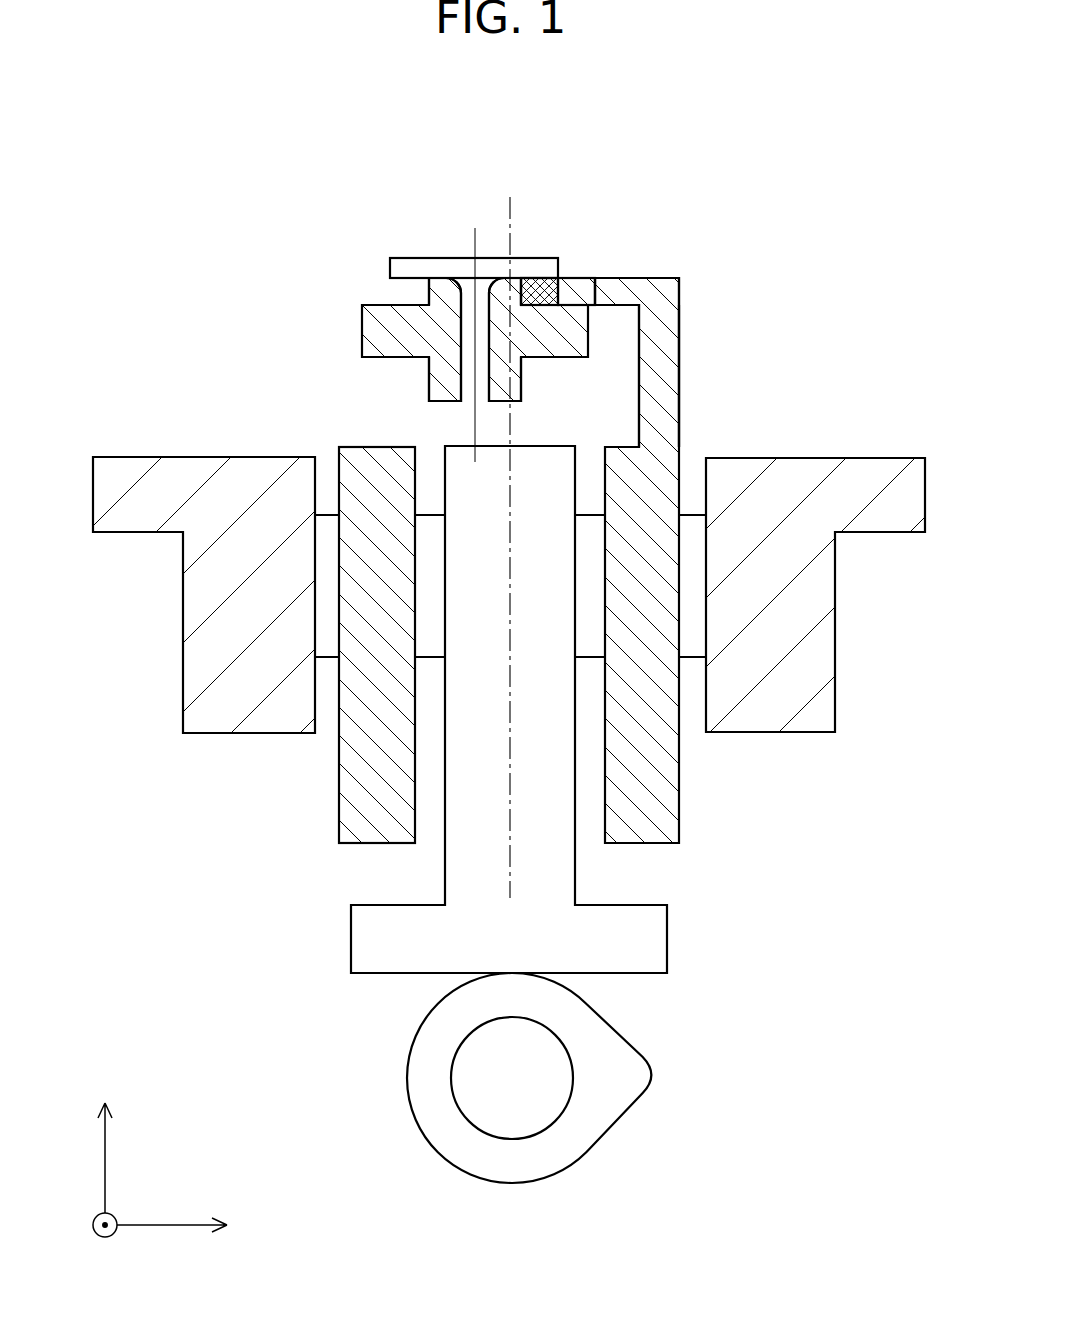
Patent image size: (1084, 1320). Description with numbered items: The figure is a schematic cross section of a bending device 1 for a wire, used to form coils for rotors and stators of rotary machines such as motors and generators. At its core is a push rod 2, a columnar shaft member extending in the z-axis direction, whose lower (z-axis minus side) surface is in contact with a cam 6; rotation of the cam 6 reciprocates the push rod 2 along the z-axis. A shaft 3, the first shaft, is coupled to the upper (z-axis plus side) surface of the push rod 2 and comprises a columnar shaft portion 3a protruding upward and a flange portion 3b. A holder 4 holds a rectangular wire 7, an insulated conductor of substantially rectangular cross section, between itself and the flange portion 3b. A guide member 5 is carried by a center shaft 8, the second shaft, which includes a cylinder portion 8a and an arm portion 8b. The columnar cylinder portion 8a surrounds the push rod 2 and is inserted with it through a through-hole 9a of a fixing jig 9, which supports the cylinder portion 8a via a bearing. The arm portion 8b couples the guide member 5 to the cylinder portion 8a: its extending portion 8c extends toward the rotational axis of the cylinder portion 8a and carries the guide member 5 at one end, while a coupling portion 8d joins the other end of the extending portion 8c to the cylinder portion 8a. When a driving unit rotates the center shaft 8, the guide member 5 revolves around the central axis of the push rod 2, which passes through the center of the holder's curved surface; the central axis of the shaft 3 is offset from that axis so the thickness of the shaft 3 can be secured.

The bending device 1 is at (805, 104).
The push rod 2 is at (363, 939).
The shaft 3 is at (401, 236).
The shaft portion 3a is at (468, 300).
The flange portion 3b is at (393, 268).
The holder 4 is at (368, 333).
The guide member 5 is at (577, 277).
The cam 6 is at (443, 1128).
The rectangular wire 7 is at (533, 283).
The center shaft 8 is at (321, 809).
The cylinder portion 8a is at (668, 808).
The arm portion 8b is at (699, 299).
The extending portion 8c is at (657, 285).
The coupling portion 8d is at (670, 383).
The fixing jig 9 is at (165, 648).
The through-hole 9a is at (700, 726).